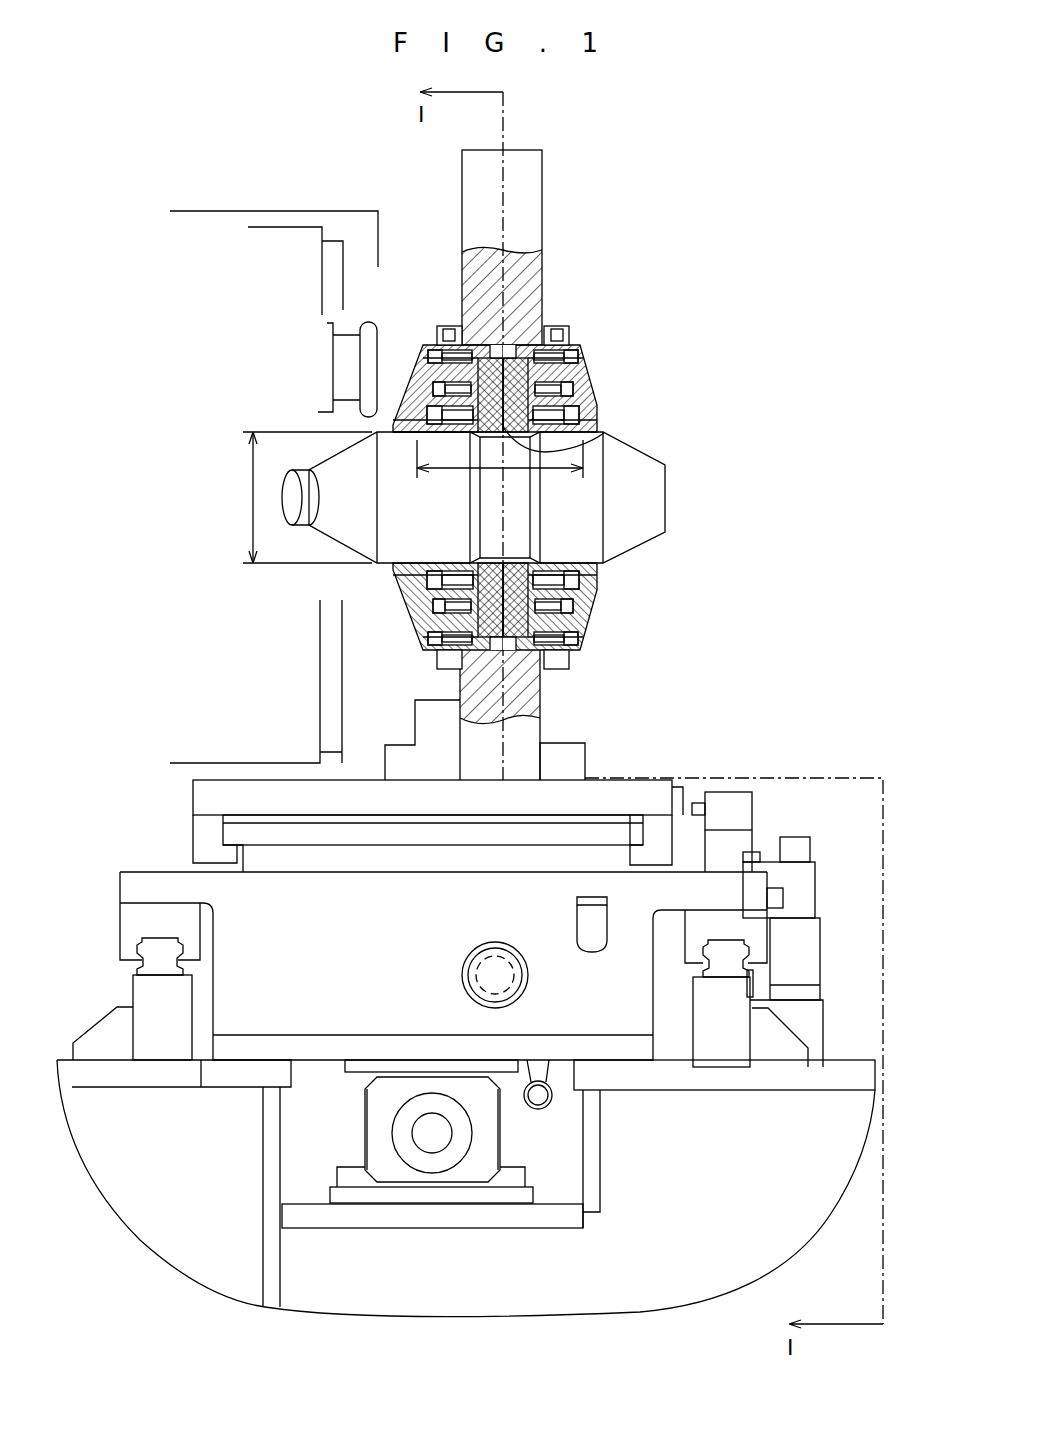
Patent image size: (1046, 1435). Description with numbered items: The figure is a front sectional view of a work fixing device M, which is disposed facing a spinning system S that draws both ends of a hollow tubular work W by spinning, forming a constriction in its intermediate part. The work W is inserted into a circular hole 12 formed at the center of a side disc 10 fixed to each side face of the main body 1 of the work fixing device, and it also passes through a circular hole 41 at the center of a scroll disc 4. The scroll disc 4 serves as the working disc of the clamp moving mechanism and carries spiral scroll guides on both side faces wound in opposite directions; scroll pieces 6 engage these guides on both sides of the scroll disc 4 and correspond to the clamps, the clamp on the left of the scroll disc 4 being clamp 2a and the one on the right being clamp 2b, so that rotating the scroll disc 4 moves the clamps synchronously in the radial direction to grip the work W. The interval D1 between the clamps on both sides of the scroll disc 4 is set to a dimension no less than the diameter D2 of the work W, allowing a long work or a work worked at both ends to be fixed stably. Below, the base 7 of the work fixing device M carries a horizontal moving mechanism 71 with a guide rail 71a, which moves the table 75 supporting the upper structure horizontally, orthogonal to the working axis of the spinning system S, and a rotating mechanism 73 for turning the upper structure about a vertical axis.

The work fixing device M is at (604, 246).
The main body of work fixing device 1 is at (583, 331).
The clamp 2a is at (405, 386).
The clamp 2b is at (594, 364).
The scroll disc 4 is at (523, 338).
The scroll piece 6 is at (432, 347).
The side disc 10 is at (448, 669).
The circular hole 12 is at (455, 426).
The circular hole 41 is at (601, 435).
The work W is at (620, 470).
The spinning system S is at (365, 372).
The interval of the clamps D1 is at (516, 470).
The diameter of the work D2 is at (250, 497).
The base 7 is at (745, 770).
The horizontal moving mechanism 71 is at (105, 937).
The guide rail 71a is at (160, 950).
The rotating mechanism 73 is at (278, 857).
The table 75 is at (217, 898).